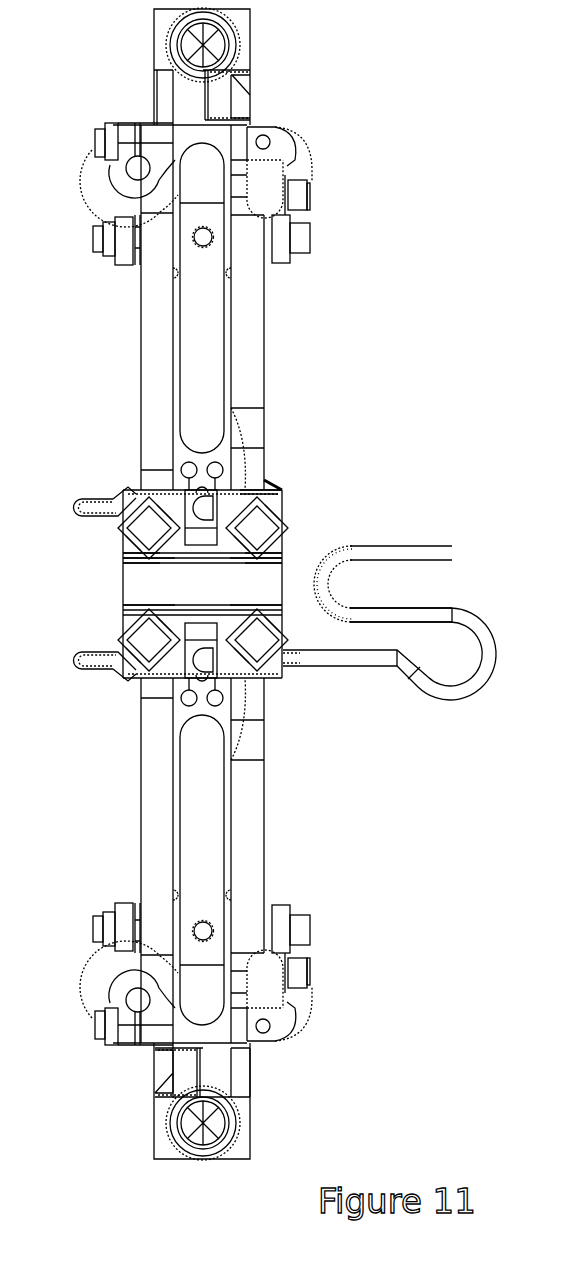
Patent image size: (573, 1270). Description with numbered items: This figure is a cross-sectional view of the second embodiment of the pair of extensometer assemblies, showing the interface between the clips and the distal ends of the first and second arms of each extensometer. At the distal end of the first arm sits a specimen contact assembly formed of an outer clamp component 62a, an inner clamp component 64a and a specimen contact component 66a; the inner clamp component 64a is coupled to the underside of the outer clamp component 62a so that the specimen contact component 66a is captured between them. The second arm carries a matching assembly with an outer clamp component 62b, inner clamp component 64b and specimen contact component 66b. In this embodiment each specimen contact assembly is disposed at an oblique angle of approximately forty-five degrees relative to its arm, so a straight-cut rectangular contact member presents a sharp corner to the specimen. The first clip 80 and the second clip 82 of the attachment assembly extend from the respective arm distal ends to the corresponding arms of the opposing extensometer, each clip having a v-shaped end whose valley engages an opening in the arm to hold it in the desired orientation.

The first clip 80 is at (79, 497).
The second clip 82 is at (275, 494).
The outer clamp component 62a is at (280, 531).
The outer clamp component 62b is at (122, 535).
The inner clamp component 64a is at (282, 553).
The inner clamp component 64b is at (163, 558).
The specimen contact component 66a is at (272, 563).
The specimen contact component 66b is at (130, 565).